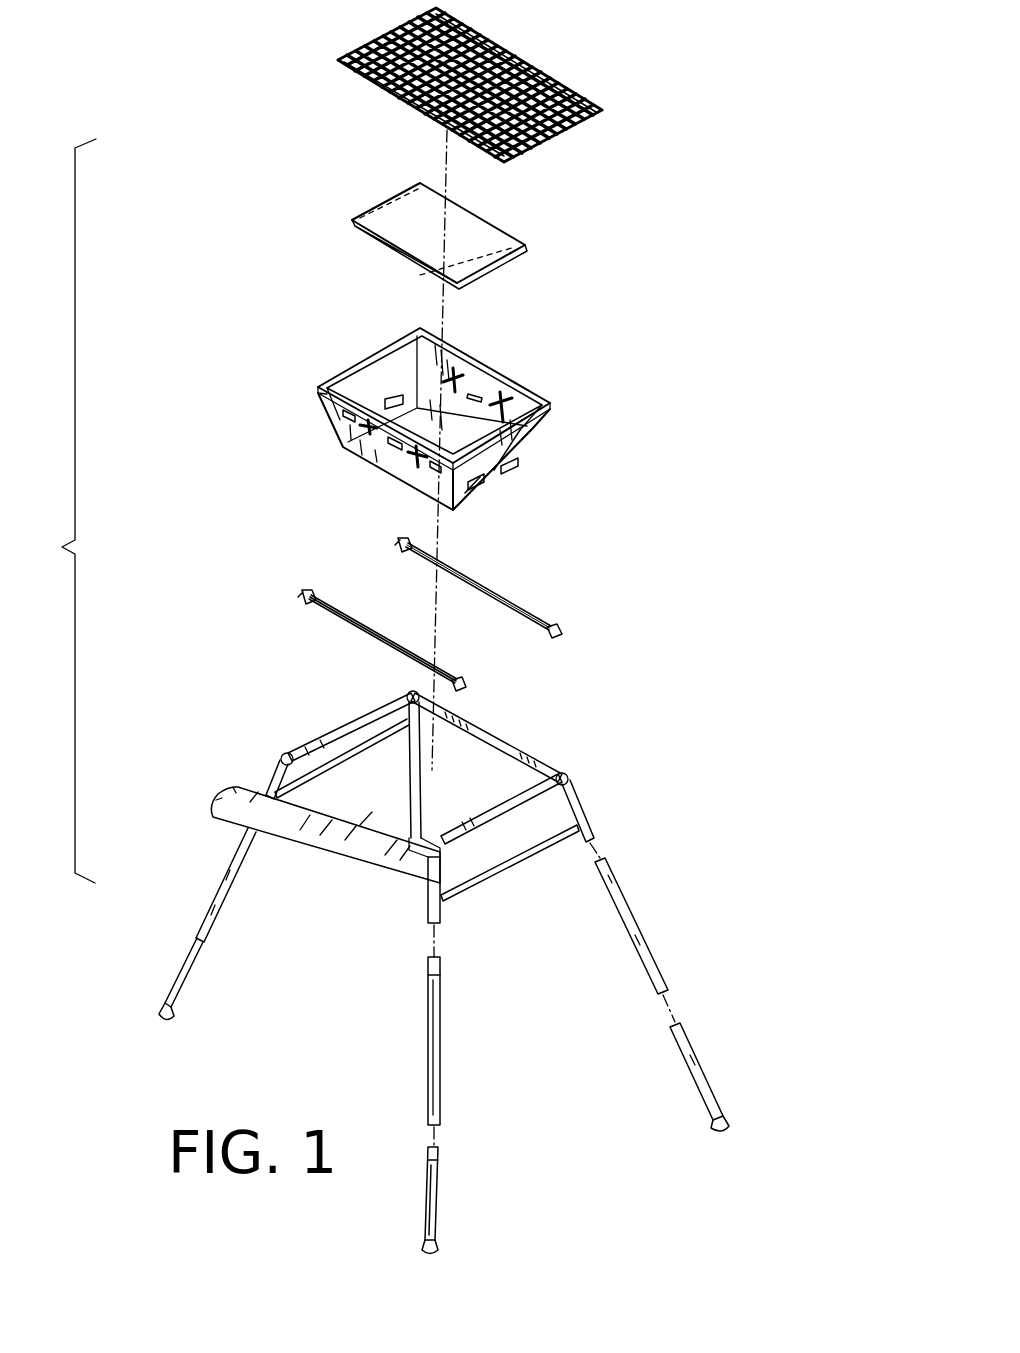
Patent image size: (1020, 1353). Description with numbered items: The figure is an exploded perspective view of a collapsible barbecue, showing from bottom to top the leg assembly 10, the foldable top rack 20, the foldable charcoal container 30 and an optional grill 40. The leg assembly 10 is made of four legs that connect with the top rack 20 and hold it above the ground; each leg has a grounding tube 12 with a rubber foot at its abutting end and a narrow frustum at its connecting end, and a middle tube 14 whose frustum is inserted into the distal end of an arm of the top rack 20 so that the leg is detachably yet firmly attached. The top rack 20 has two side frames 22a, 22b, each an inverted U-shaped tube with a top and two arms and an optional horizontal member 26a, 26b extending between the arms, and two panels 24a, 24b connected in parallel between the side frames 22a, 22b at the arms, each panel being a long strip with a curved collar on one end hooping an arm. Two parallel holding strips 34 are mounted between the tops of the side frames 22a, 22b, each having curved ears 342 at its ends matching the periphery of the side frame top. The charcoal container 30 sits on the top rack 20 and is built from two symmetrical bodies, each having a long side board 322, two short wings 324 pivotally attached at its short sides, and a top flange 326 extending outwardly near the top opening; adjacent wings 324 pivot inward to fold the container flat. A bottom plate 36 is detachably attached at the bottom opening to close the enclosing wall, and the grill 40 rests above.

The leg assembly 10 is at (705, 968).
The grounding tube 12 is at (431, 1203).
The middle tube 14 is at (438, 1061).
The foldable top rack 20 is at (625, 775).
The side frame 22a is at (336, 728).
The side frame 22b is at (594, 843).
The panel 24a is at (356, 860).
The panel 24b is at (495, 731).
The horizontal member 26a is at (292, 760).
The horizontal member 26b is at (499, 864).
The foldable charcoal container 30 is at (256, 387).
The long side board 322 is at (480, 392).
The short wing 324 is at (520, 444).
The top flange 326 is at (547, 402).
The holding strip 34 is at (487, 588).
The curved ear 342 is at (566, 629).
The bottom plate 36 is at (476, 240).
The grill 40 is at (546, 65).